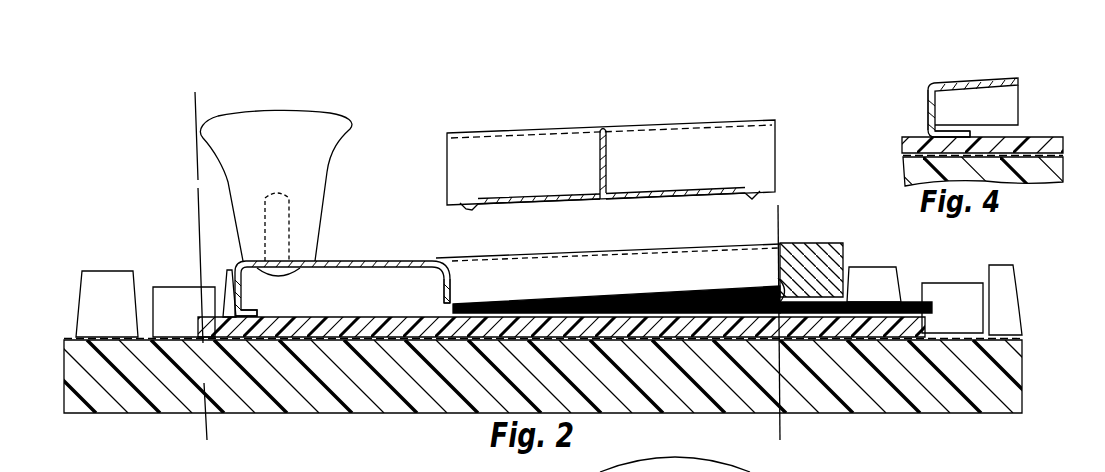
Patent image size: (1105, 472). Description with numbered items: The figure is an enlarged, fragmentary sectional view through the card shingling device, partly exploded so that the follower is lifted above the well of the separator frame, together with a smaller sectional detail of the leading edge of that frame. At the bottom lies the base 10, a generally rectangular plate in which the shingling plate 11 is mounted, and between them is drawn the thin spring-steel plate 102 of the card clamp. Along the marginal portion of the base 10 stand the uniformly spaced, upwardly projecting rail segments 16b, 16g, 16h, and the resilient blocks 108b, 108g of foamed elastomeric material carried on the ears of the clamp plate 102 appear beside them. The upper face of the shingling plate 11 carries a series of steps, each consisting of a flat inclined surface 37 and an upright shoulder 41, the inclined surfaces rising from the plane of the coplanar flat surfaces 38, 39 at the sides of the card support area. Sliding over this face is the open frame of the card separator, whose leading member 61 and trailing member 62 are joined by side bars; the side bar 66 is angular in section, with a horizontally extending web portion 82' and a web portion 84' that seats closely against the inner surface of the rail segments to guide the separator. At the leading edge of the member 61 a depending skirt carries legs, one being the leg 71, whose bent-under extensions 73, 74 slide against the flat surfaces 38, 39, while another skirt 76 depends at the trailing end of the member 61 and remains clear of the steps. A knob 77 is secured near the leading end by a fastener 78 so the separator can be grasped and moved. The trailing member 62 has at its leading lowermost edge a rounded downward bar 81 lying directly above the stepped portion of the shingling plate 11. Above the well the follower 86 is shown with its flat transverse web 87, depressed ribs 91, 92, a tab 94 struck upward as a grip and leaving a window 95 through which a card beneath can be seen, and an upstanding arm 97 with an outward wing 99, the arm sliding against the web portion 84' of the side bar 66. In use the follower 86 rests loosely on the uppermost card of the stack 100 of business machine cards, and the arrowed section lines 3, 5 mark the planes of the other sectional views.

In FIG. 2, the section line 3- 3 is at (227, 431).
In FIG. 2, the section line 5- 5 is at (799, 433).
In FIG. 2, the base 10 is at (1026, 362).
In FIG. 4, the base 10 is at (1062, 172).
In FIG. 2, the shingling plate 11 is at (940, 318).
In FIG. 4, the shingling plate 11 is at (1063, 139).
In FIG. 2, the plate 102 is at (1016, 336).
In FIG. 4, the plate 102 is at (1066, 155).
In FIG. 2, the rail segment 16b is at (102, 280).
In FIG. 2, the resilient block 108b is at (165, 296).
In FIG. 2, the leading member 61 is at (383, 260).
In FIG. 4, the leading member 61 is at (976, 81).
In FIG. 2, the bent-under extension 74 is at (257, 311).
In FIG. 2, the skirt 76 is at (452, 283).
In FIG. 2, the inclined surface 37 is at (366, 316).
In FIG. 2, the shoulder 41 is at (418, 316).
In FIG. 2, the knob 77 is at (293, 121).
In FIG. 2, the fastener 78 is at (292, 220).
In FIG. 2, the arm 97 is at (766, 148).
In FIG. 2, the wing 99 is at (690, 123).
In FIG. 2, the window 95 is at (537, 199).
In FIG. 2, the web portion 87 is at (687, 196).
In FIG. 2, the tab 94 is at (600, 148).
In FIG. 2, the follower 86 is at (662, 166).
In FIG. 2, the depressed rib 91 is at (479, 207).
In FIG. 2, the depressed rib 92 is at (753, 200).
In FIG. 2, the side bar 66 is at (541, 257).
In FIG. 2, the horizontally extending web portion 82' is at (615, 240).
In FIG. 2, the vertically extending web portion 84' is at (615, 263).
In FIG. 2, the stack 100 is at (527, 296).
In FIG. 2, the bar 81 is at (780, 282).
In FIG. 2, the trailing member 62 is at (822, 253).
In FIG. 2, the rail segment 16g is at (882, 276).
In FIG. 2, the resilient block 108g is at (942, 286).
In FIG. 2, the rail segment 16h is at (1005, 276).
In FIG. 4, the leg 71 is at (928, 99).
In FIG. 4, the bent-under extension 73 is at (948, 133).
In FIG. 4, the flat surface 38 is at (920, 137).
In FIG. 4, the flat surface 39 is at (905, 157).